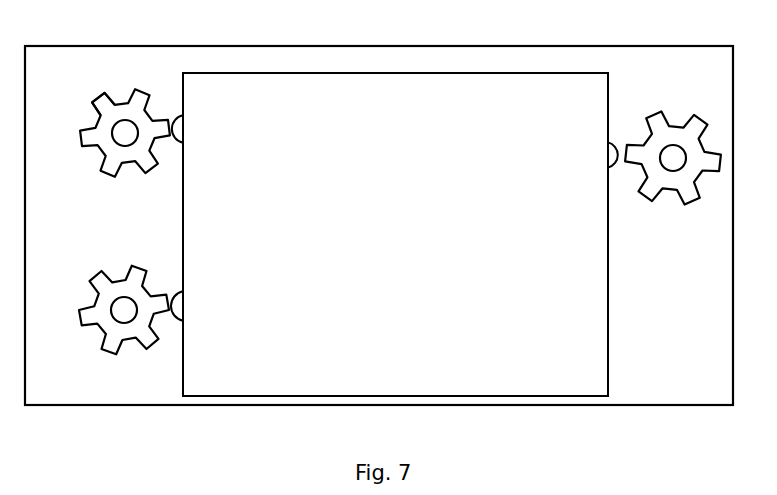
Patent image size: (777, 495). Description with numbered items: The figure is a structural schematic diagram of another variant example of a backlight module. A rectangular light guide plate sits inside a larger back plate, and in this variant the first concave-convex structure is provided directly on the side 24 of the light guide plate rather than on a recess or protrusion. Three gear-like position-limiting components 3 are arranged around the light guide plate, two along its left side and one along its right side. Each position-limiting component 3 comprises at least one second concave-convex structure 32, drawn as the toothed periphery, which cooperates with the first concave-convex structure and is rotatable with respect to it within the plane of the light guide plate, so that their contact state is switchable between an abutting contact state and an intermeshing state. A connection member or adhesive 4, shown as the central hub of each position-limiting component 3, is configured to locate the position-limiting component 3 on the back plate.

The position-limiting component 3 is at (86, 98).
The second concave-convex structure 32 is at (107, 105).
The connection member or adhesive 4 is at (116, 144).
The side of the light guide plate 24 is at (610, 238).